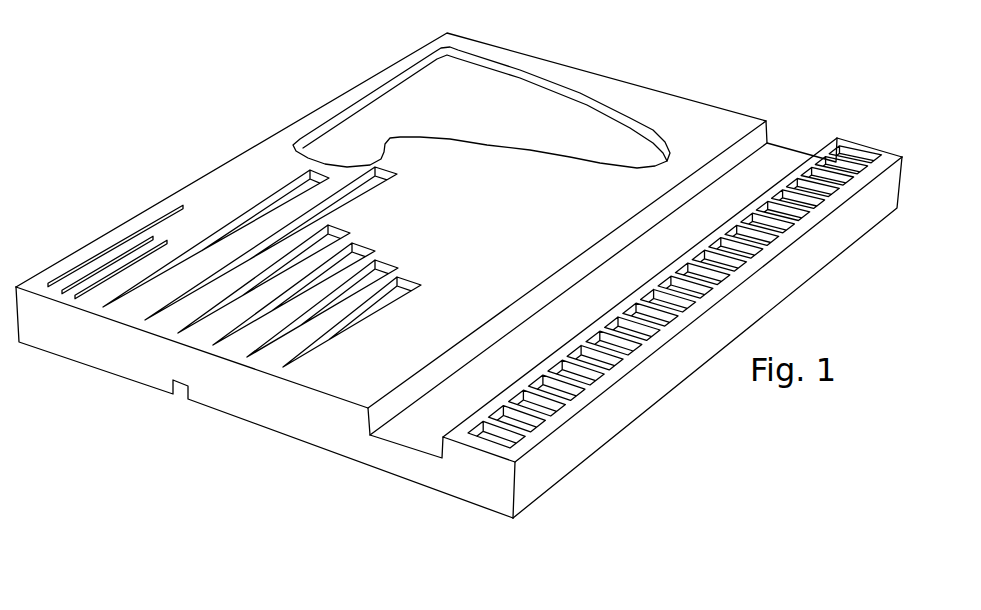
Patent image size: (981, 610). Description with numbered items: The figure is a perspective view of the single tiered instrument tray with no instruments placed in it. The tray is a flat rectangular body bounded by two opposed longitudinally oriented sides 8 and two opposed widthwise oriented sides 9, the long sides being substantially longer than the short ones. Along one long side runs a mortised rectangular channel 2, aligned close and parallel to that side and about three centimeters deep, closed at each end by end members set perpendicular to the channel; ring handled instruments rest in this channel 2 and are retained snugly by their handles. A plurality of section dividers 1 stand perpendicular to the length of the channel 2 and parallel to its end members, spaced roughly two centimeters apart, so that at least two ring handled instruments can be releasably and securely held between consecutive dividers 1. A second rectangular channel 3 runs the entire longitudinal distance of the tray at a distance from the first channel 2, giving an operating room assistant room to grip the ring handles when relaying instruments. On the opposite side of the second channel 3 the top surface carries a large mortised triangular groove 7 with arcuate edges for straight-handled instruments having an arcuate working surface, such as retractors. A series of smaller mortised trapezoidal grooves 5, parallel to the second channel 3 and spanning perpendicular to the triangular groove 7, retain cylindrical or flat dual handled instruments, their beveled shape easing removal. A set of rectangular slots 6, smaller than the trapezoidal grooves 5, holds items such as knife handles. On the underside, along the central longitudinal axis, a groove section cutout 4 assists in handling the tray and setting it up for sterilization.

The section dividers 1 is at (513, 423).
The mortised rectangular channel 2 is at (488, 443).
The second rectangular channel 3 is at (405, 435).
The groove section cutout 4 is at (227, 413).
The trapezoidal grooves 5 is at (150, 316).
The rectangular slots 6 is at (153, 222).
The triangular groove 7 is at (397, 110).
The longitudinally oriented sides 8 is at (868, 215).
The widthwise oriented sides 9 is at (708, 97).